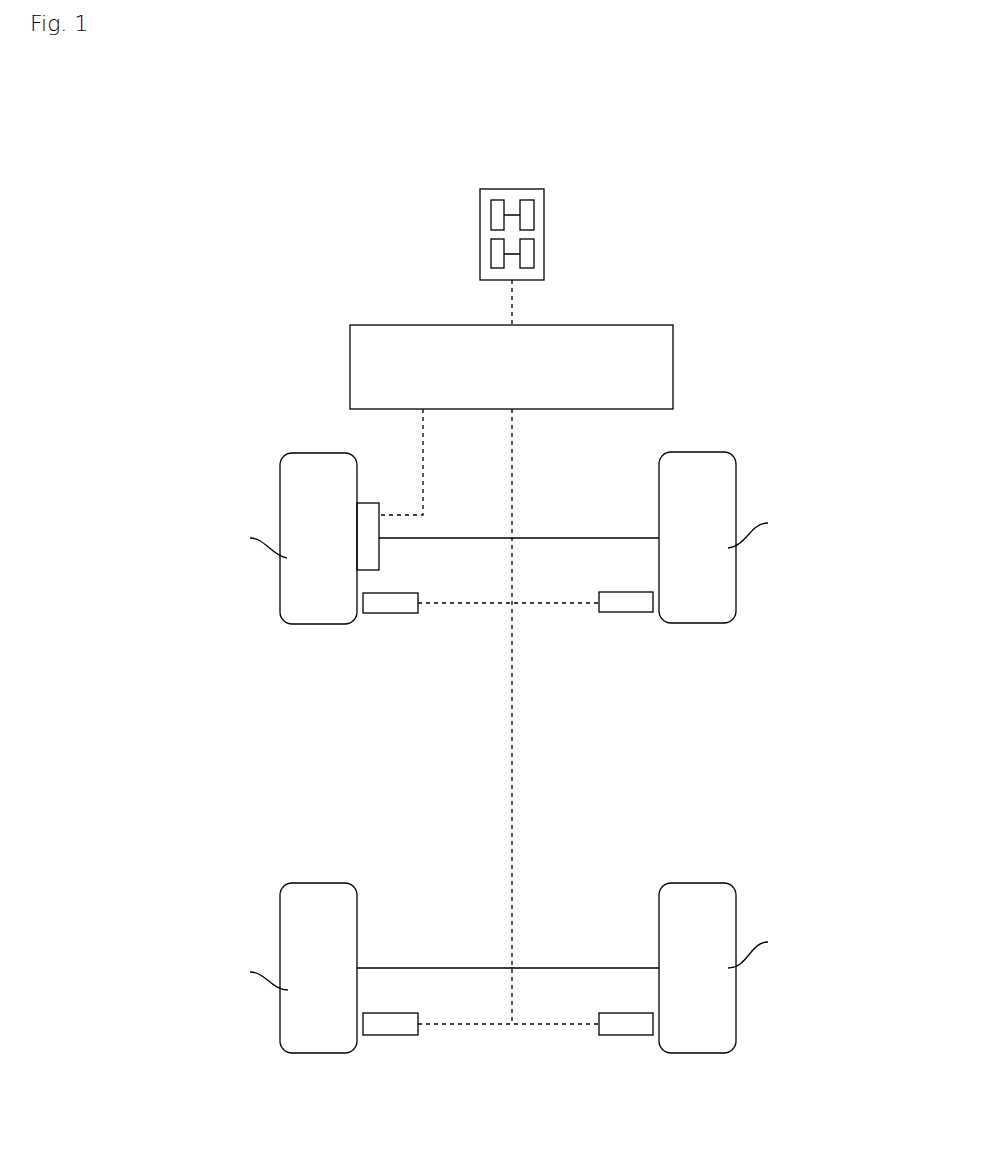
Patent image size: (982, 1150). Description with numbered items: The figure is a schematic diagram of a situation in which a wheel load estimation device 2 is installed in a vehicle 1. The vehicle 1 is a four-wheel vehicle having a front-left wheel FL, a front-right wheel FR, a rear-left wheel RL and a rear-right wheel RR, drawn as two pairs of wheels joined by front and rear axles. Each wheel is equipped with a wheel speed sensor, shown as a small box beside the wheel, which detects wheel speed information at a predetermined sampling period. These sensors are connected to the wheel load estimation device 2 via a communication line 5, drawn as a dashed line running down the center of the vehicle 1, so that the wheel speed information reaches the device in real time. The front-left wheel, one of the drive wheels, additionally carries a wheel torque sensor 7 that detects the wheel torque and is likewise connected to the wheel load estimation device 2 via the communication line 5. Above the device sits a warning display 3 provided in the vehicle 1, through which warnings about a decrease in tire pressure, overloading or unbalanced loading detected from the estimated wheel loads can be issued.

The vehicle 1 is at (797, 449).
The wheel load estimation device 2 is at (660, 355).
The warning display 3 is at (513, 195).
The communication line 5 is at (515, 786).
The wheel torque sensor 7 is at (367, 515).